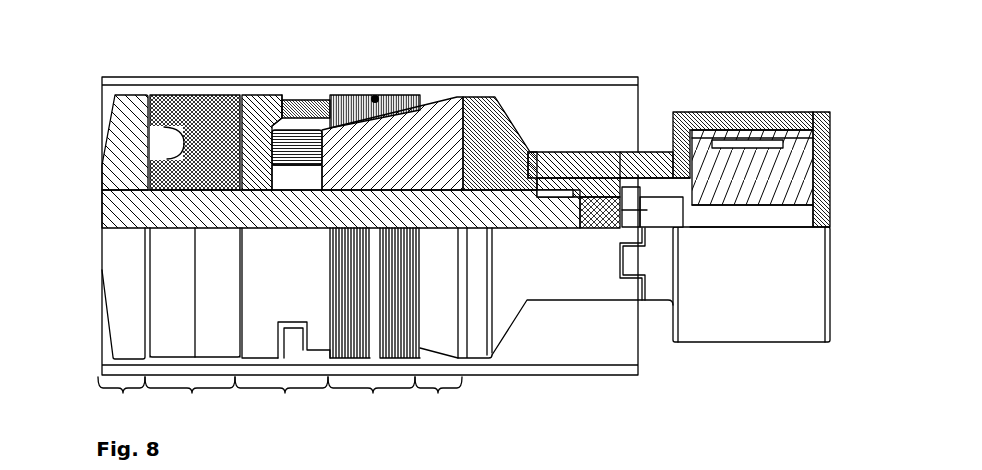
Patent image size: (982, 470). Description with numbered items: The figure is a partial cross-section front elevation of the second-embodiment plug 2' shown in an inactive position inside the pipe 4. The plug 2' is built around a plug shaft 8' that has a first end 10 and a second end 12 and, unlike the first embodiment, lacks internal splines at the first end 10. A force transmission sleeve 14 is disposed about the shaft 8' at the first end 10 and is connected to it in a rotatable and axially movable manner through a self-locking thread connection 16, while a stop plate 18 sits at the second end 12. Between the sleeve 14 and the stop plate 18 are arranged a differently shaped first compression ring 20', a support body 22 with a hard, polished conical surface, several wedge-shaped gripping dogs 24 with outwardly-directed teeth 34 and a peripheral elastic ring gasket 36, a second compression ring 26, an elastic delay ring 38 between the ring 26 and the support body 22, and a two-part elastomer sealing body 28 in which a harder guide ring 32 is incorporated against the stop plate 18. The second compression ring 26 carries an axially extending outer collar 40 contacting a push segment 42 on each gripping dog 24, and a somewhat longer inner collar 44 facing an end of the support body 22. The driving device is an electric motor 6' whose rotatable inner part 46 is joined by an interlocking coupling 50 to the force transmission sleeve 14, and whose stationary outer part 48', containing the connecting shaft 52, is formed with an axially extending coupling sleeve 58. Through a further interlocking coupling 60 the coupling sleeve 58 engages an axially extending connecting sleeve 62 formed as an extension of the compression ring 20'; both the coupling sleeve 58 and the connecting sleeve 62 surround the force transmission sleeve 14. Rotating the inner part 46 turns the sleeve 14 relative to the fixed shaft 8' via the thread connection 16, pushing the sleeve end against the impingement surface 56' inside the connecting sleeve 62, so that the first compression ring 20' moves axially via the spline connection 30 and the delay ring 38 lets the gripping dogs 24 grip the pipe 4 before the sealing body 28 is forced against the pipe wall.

The plug 2' is at (57, 228).
The pipe 4 is at (637, 78).
The electric motor 6' is at (751, 311).
The plug shaft 8' is at (407, 277).
The first end 10 is at (630, 200).
The second end 12 is at (152, 198).
The force transmission sleeve 14 is at (578, 190).
The thread connection 16 is at (513, 200).
The stop plate 18 is at (122, 125).
The first compression ring 20' is at (575, 225).
The support body 22 is at (455, 120).
The gripping dogs 24 is at (410, 100).
The second compression ring 26 is at (252, 108).
The sealing body 28 is at (197, 108).
The spline connection 30 is at (445, 232).
The guide ring 32 is at (175, 146).
The teeth 34 is at (343, 98).
The ring gasket 36 is at (376, 99).
The delay ring 38 is at (318, 195).
The outer collar 40 is at (276, 100).
The push segment 42 is at (300, 110).
The inner collar 44 is at (283, 192).
The rotatable inner part 46 is at (720, 160).
The stationary outer part 48' is at (817, 151).
The interlocking coupling 50 is at (654, 202).
The connecting shaft 52 is at (755, 212).
The impingement surface 56' is at (535, 141).
The coupling sleeve 58 is at (650, 152).
The interlocking coupling 60 is at (622, 152).
The connecting sleeve 62 is at (555, 152).